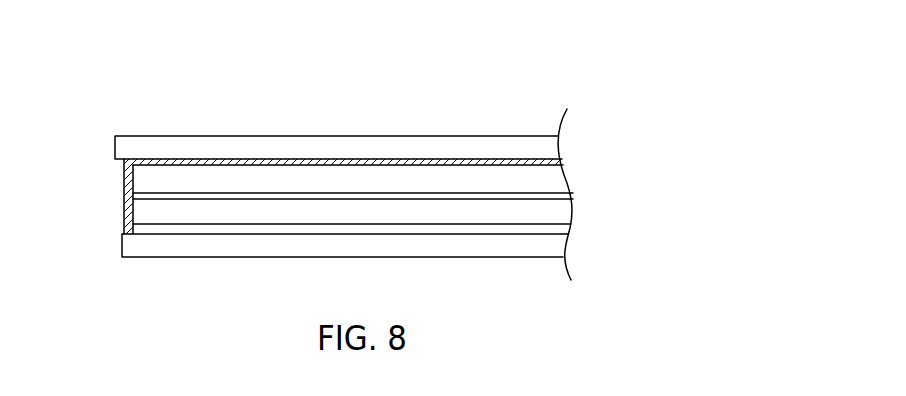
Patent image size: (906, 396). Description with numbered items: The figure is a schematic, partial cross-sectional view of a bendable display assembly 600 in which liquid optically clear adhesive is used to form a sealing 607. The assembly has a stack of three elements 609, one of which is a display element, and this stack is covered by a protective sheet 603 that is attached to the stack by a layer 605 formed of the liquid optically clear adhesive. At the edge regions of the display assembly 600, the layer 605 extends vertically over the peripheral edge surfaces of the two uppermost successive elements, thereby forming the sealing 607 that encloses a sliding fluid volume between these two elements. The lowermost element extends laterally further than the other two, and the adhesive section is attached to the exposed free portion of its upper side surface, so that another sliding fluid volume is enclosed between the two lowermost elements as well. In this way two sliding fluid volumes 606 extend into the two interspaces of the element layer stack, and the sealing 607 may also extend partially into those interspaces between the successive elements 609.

The display assembly 600 is at (146, 68).
The protective sheet 603 is at (380, 146).
The layer formed of LOCA 605 is at (250, 163).
The sliding fluid volumes 606 is at (192, 197).
The sealing 607 is at (128, 182).
The stack of three elements 609 is at (543, 248).